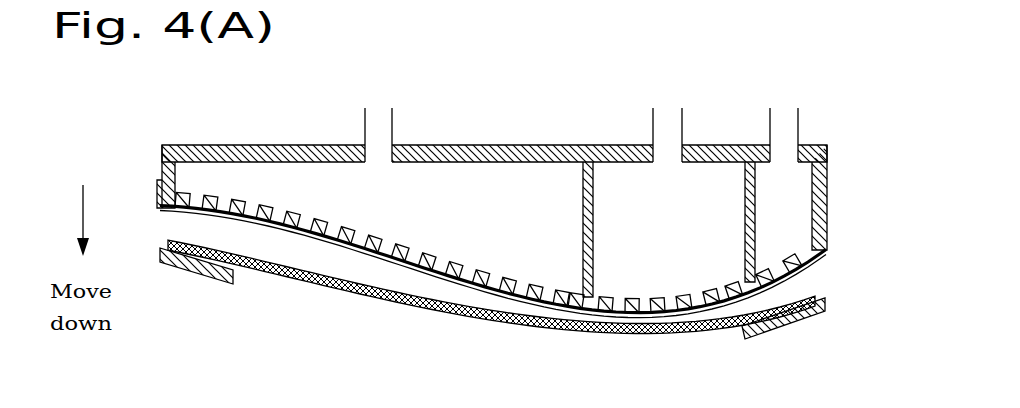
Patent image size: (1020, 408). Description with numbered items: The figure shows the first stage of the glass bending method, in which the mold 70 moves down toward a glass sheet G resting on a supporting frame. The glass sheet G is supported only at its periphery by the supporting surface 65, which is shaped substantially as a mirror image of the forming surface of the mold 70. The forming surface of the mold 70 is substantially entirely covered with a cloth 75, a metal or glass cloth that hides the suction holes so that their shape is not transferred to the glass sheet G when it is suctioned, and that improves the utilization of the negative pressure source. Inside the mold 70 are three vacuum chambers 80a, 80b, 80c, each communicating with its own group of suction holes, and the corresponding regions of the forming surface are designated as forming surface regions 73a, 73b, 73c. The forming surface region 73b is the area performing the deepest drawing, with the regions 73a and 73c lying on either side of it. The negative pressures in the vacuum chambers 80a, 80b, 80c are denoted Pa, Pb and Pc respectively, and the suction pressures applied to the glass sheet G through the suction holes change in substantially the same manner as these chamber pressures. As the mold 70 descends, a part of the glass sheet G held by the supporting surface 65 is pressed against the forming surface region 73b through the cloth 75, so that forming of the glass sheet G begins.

The mold 70 is at (840, 181).
The cloth 75 is at (832, 242).
The forming surface region 73a is at (428, 250).
The forming surface region 73b is at (670, 296).
The forming surface region 73c is at (779, 268).
The vacuum chamber 80a is at (521, 178).
The vacuum chamber 80b is at (691, 178).
The vacuum chamber 80c is at (808, 167).
The negative pressure of vacuum chamber 80a Pa is at (378, 112).
The negative pressure of vacuum chamber 80b Pb is at (667, 112).
The negative pressure of vacuum chamber 80c Pc is at (784, 112).
The glass sheet G is at (810, 292).
The supporting surface 65 is at (200, 280).